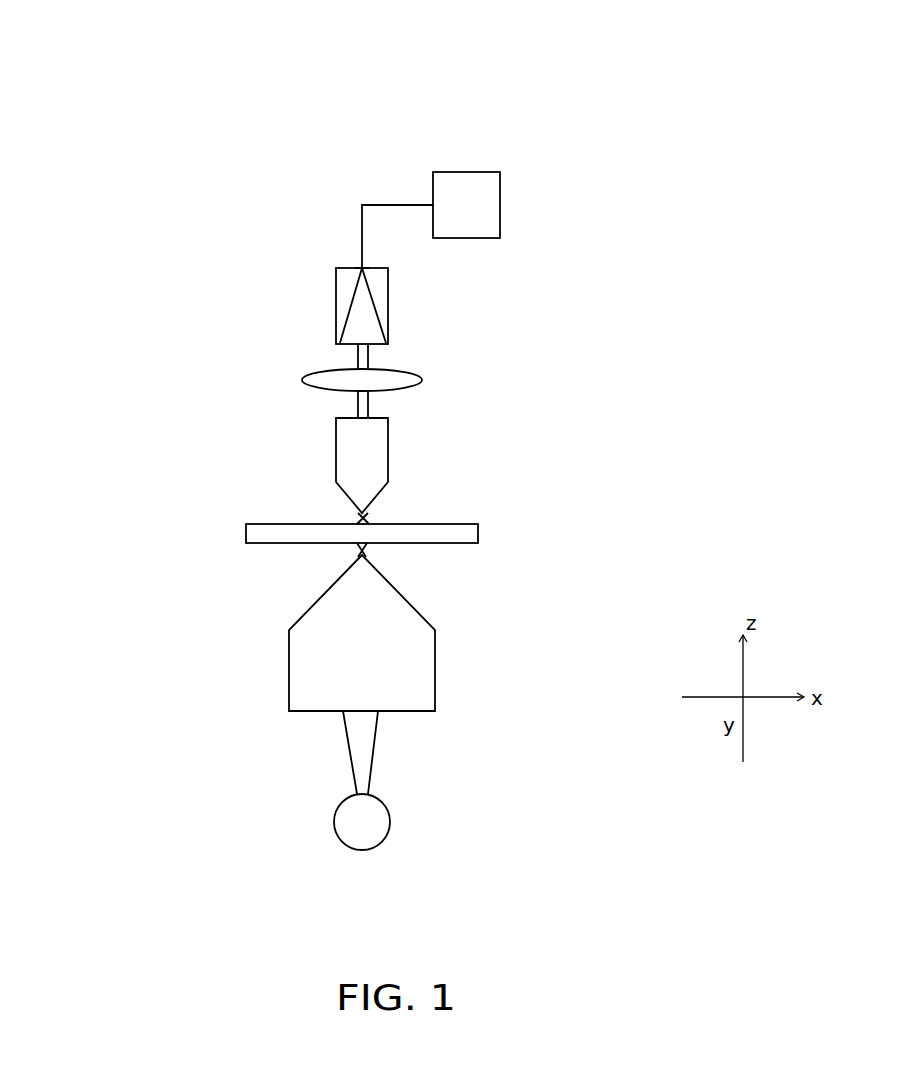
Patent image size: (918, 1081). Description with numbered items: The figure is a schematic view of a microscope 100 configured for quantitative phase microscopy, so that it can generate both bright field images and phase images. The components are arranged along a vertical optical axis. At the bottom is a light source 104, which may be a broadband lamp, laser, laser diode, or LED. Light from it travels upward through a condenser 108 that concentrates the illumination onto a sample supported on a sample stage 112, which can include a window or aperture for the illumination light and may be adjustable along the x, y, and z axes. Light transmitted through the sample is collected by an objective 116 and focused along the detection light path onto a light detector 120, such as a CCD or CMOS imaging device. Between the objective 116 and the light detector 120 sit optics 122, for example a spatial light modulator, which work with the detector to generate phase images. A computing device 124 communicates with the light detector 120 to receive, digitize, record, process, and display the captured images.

The microscope 100 is at (83, 136).
The light source 104 is at (390, 815).
The condenser 108 is at (289, 665).
The sample stage 112 is at (460, 524).
The objective 116 is at (336, 458).
The light detector 120 is at (336, 308).
The optics 122 is at (412, 375).
The computing device 124 is at (500, 197).